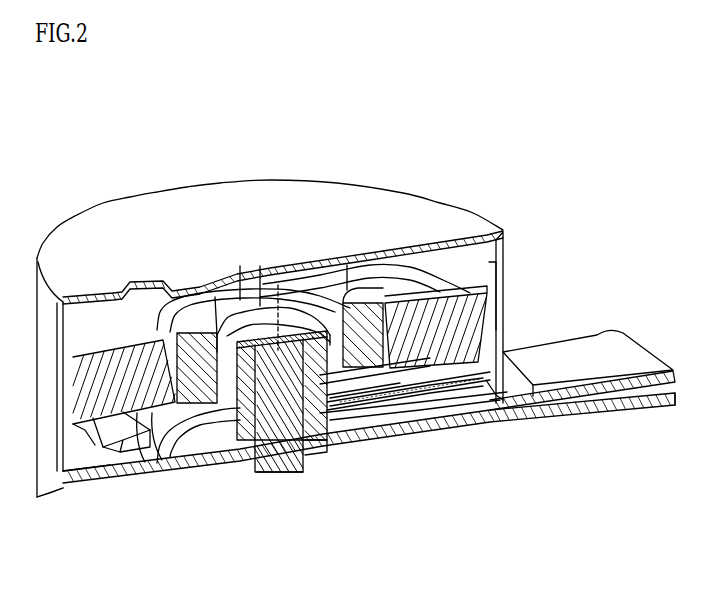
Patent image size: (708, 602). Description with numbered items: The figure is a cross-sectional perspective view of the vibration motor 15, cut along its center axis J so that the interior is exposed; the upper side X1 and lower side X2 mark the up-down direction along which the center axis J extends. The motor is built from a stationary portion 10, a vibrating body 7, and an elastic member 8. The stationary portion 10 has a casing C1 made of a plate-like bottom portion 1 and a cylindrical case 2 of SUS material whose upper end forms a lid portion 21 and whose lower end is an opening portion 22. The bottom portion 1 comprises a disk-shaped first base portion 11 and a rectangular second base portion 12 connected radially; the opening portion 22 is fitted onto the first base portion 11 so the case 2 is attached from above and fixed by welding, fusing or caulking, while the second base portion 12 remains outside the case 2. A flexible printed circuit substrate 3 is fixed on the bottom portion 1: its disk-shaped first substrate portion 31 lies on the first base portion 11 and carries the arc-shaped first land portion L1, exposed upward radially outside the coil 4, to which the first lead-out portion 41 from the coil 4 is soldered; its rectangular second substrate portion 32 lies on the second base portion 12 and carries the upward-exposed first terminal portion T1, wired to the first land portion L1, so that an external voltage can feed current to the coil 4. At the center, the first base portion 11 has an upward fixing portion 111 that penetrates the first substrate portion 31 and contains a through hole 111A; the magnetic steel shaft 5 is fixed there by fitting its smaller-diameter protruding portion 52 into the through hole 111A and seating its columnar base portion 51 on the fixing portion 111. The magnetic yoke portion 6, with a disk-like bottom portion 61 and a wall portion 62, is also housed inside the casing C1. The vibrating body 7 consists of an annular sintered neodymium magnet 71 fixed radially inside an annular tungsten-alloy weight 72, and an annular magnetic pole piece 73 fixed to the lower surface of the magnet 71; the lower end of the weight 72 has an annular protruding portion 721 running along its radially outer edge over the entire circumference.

The vibration motor 15 is at (466, 127).
The bottom portion 1 is at (628, 403).
The stationary portion 10 is at (163, 492).
The first base portion 11 is at (110, 484).
The fixing portion 111 is at (250, 463).
The through hole 111A is at (268, 470).
The second base portion 12 is at (678, 397).
The case 2 is at (72, 222).
The lid portion 21 is at (153, 203).
The opening portion 22 is at (60, 492).
The substrate 3 is at (224, 462).
The first substrate portion 31 is at (196, 455).
The second substrate portion 32 is at (632, 342).
The coil 4 is at (337, 442).
The first lead-out portion 41 is at (360, 432).
The shaft 5 is at (286, 458).
The base portion 51 is at (247, 270).
The protruding portion 52 is at (296, 460).
The yoke portion 6 is at (312, 316).
The bottom portion 61 is at (283, 298).
The wall portion 62 is at (345, 295).
The vibrating body 7 is at (470, 268).
The magnet 71 is at (412, 440).
The weight 72 is at (500, 322).
The protruding portion 721 is at (494, 403).
The pole piece 73 is at (430, 428).
The elastic member 8 is at (386, 455).
The center axis J is at (280, 290).
The casing C1 is at (518, 281).
The first terminal portion T1 is at (573, 353).
The first land portion L1 is at (194, 470).
The upper side X1 is at (588, 548).
The lower side X2 is at (592, 540).